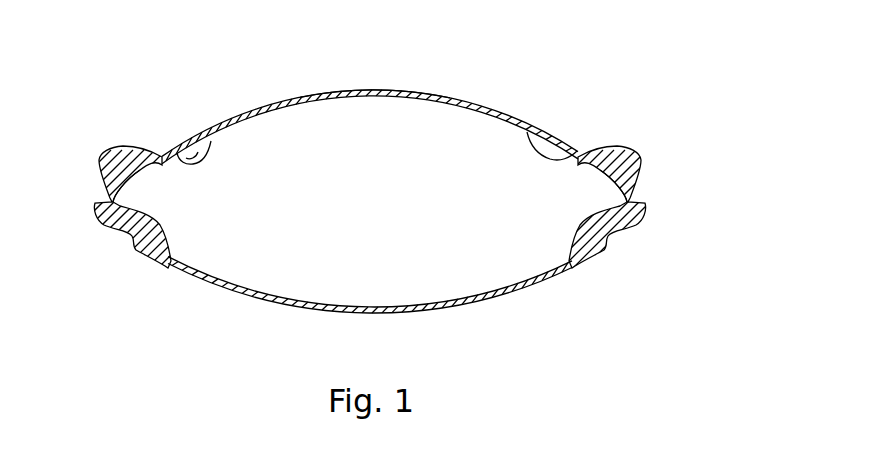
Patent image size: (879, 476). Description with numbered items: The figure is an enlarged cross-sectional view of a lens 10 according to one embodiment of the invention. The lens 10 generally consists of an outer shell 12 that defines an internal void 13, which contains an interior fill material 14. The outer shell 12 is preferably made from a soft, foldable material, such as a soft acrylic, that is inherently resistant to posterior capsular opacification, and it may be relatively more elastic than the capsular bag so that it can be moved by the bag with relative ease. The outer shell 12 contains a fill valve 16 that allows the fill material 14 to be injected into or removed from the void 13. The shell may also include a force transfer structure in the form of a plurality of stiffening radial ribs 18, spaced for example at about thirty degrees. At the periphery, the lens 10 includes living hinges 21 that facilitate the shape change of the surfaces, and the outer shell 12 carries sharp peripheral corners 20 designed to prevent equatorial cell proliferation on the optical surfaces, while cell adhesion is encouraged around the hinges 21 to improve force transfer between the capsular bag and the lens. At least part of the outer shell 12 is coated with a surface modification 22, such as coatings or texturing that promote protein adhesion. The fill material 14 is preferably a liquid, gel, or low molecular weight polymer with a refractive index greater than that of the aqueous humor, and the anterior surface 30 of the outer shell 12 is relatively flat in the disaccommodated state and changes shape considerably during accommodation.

The lens 10 is at (498, 62).
The outer shell 12 is at (502, 112).
The internal void 13 is at (458, 283).
The interior fill material 14 is at (387, 213).
The fill valve 16 is at (195, 148).
The stiffening radial ribs 18 is at (215, 138).
The sharp peripheral corners 20 is at (95, 203).
The living hinges 21 is at (115, 188).
The surface modification 22 is at (280, 100).
The anterior surface 30 is at (377, 90).